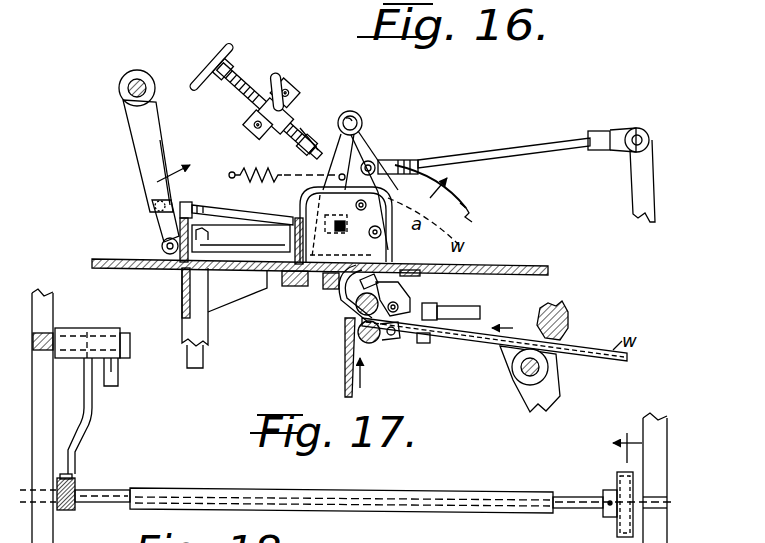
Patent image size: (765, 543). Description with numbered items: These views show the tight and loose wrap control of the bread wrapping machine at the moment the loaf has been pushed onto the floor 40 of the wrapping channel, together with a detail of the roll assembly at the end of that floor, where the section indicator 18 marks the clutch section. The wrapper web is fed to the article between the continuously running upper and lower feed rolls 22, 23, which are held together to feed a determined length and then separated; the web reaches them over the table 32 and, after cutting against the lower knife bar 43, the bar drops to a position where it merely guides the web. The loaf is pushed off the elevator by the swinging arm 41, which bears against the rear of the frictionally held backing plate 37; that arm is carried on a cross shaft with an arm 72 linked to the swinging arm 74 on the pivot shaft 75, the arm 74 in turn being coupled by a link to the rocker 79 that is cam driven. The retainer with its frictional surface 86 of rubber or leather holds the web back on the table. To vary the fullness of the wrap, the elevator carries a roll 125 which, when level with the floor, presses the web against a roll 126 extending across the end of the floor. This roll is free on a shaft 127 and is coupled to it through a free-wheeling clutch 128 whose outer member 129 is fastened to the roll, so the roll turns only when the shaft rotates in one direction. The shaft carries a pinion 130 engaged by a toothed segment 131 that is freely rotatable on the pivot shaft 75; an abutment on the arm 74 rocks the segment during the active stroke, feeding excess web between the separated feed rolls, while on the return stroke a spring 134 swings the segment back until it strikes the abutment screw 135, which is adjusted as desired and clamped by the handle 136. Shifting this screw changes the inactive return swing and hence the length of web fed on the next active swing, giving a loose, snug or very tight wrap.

In FIG. 17, the section line for FIG. 18 is at (622, 436).
In FIG. 16, the upper feed roll 22 is at (357, 309).
In FIG. 16, the lower feed roll 23 is at (373, 343).
In FIG. 16, the table 32 is at (573, 354).
In FIG. 16, the backing plate 37 is at (243, 249).
In FIG. 16, the floor 40 is at (541, 266).
In FIG. 16, the swinging arm 41 is at (152, 148).
In FIG. 16, the lower knife bar 43 is at (354, 386).
In FIG. 16, the arm 72 is at (152, 183).
In FIG. 16, the swinging arm 74 is at (364, 150).
In FIG. 17, the swinging arm 74 is at (120, 380).
In FIG. 16, the pivot shaft 75 is at (357, 114).
In FIG. 17, the pivot shaft 75 is at (67, 334).
In FIG. 16, the rocker 79 is at (643, 178).
In FIG. 16, the frictional surface 86 is at (565, 333).
In FIG. 16, the roll 125 is at (331, 286).
In FIG. 16, the roll 126 is at (340, 300).
In FIG. 17, the roll 126 is at (388, 492).
In FIG. 17, the shaft 127 is at (432, 496).
In FIG. 17, the free-wheeling clutch 128 is at (612, 465).
In FIG. 17, the outer member of the clutch 129 is at (625, 524).
In FIG. 17, the pinion 130 is at (63, 511).
In FIG. 16, the toothed segment 131 is at (469, 214).
In FIG. 17, the toothed segment 131 is at (72, 464).
In FIG. 16, the spring 134 is at (250, 160).
In FIG. 16, the abutment screw 135 is at (322, 157).
In FIG. 16, the handle 136 is at (296, 58).